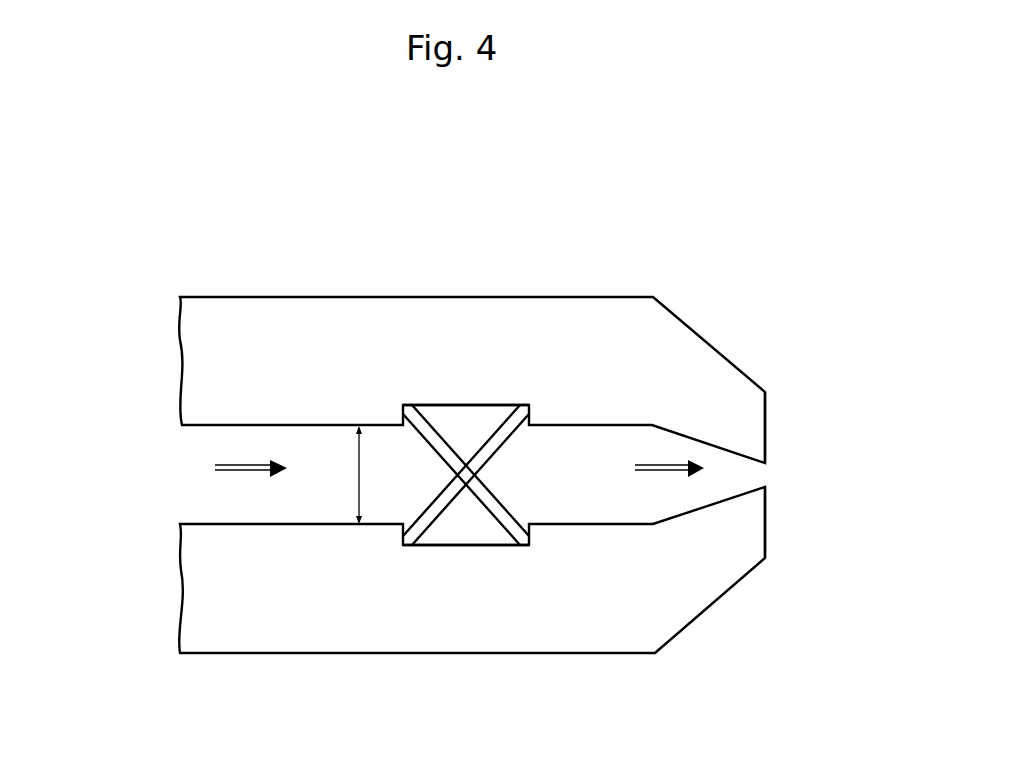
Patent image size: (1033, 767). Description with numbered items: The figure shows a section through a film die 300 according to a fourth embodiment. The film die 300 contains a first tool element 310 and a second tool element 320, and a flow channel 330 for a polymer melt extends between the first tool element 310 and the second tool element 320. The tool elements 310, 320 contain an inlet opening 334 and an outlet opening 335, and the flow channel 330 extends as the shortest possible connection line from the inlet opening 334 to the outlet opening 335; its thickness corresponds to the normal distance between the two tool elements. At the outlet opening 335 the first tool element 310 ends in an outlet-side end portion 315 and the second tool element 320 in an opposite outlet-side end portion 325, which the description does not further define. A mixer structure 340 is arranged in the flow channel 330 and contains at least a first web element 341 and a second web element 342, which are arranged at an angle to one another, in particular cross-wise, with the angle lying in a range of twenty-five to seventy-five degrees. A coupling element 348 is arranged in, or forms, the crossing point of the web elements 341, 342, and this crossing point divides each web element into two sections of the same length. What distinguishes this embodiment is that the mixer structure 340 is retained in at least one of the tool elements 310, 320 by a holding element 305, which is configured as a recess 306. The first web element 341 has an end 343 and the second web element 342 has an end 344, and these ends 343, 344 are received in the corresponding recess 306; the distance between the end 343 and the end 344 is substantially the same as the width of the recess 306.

The film die 300 is at (466, 422).
The holding element 305 is at (536, 422).
The recess 306 is at (513, 405).
The first tool element 310 is at (217, 388).
The upper nozzle lip 315 is at (765, 432).
The second tool element 320 is at (208, 597).
The lower nozzle lip 325 is at (767, 505).
The flow channel 330 is at (217, 523).
The inlet opening 334 is at (185, 468).
The outlet opening 335 is at (767, 475).
The mixer structure 340 is at (456, 424).
The first web element 341 is at (438, 448).
The second web element 342 is at (475, 470).
The end of the first web element 343 is at (407, 405).
The end of the second web element 344 is at (535, 407).
The coupling element 348 is at (463, 483).